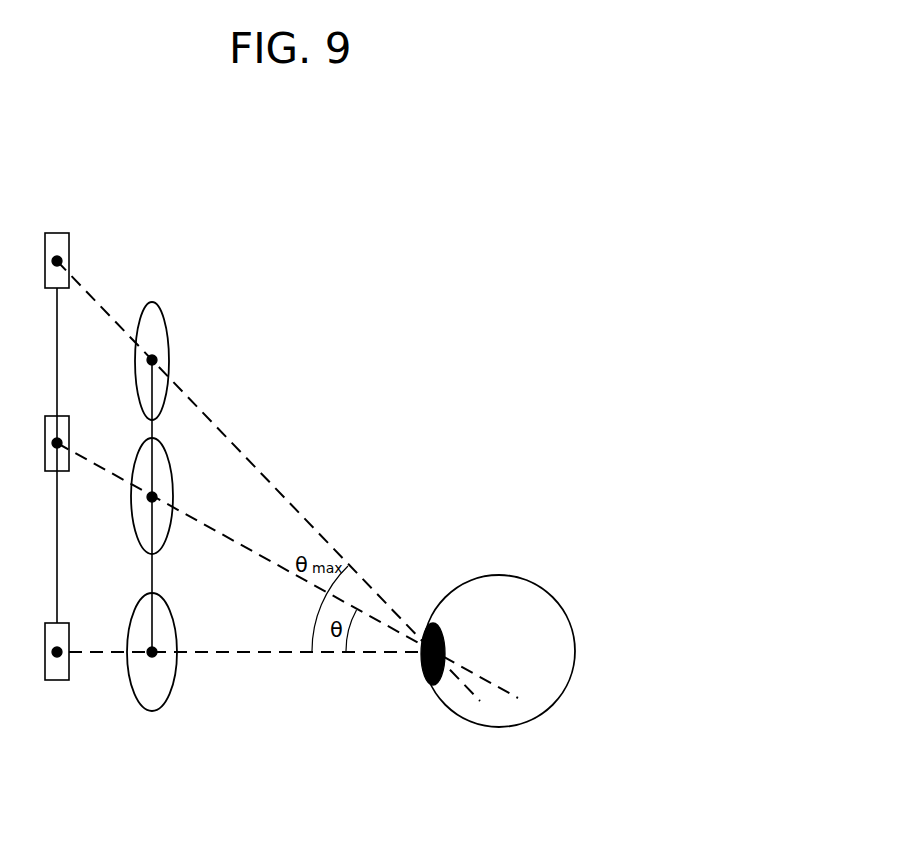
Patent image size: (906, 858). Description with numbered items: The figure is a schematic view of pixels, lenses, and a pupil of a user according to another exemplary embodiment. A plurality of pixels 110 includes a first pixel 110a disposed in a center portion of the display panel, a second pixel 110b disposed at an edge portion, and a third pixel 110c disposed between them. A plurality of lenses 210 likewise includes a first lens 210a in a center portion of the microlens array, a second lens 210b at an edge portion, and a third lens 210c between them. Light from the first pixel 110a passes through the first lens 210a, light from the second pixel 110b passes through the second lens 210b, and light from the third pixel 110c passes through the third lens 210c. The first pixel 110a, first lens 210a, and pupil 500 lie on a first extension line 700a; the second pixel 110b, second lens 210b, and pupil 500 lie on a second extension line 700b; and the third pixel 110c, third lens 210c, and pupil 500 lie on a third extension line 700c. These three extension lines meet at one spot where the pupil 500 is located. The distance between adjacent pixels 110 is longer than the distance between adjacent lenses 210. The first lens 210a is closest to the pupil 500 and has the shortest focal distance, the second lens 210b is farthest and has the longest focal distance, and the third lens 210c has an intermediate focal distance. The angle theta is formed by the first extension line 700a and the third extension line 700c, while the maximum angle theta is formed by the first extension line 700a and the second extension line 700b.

The plurality of pixels 110 is at (478, 380).
The first pixel 110a is at (57, 682).
The second pixel 110b is at (69, 240).
The third pixel 110c is at (69, 424).
The plurality of lenses 210 is at (478, 480).
The first lens 210a is at (165, 706).
The second lens 210b is at (167, 322).
The third lens 210c is at (163, 552).
The pupil 500 is at (424, 624).
The first extension line 700a is at (277, 654).
The second extension line 700b is at (268, 480).
The third extension line 700c is at (245, 547).